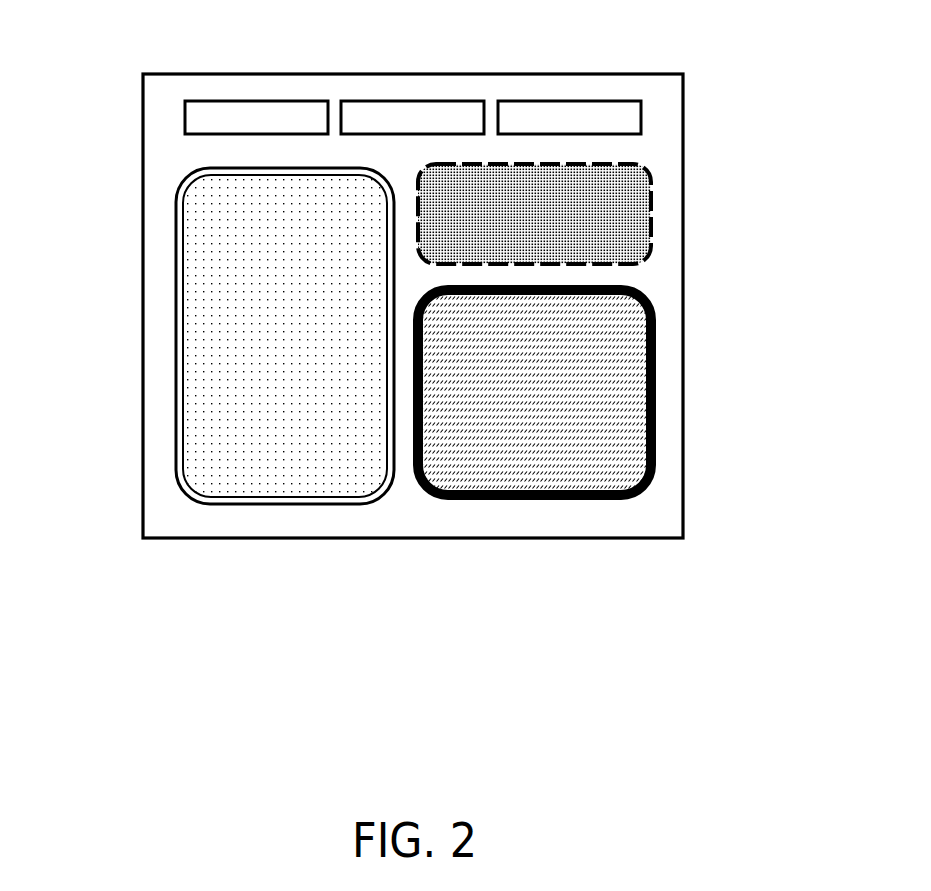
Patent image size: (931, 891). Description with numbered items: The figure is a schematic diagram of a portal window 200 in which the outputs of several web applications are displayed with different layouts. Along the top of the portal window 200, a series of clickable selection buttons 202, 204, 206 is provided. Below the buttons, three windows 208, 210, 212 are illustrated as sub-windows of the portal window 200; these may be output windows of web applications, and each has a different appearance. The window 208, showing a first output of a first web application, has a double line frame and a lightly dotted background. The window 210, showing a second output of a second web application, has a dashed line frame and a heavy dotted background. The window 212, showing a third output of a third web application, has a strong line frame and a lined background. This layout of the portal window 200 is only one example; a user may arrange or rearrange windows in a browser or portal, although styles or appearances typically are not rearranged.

The portal window 200 is at (142, 157).
The clickable selection button 202 is at (218, 116).
The clickable selection button 204 is at (378, 116).
The clickable selection button 206 is at (533, 116).
The window 208 is at (176, 478).
The window 210 is at (653, 224).
The window 212 is at (657, 420).